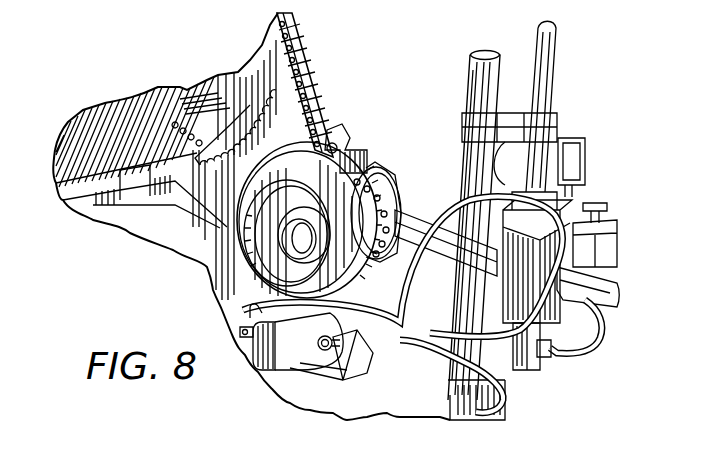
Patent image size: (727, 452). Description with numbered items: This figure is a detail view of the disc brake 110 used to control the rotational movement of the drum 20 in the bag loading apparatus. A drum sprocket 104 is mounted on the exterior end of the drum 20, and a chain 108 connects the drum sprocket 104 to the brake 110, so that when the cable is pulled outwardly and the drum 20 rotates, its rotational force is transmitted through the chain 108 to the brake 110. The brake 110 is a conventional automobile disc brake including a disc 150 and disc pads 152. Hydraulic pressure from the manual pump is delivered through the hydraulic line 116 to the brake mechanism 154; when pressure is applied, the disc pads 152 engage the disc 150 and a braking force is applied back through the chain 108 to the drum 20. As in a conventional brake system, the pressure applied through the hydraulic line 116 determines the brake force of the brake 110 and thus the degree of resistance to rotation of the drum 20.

The rotatable drum 20 is at (183, 95).
The drum sprocket 104 is at (267, 53).
The chain 108 is at (320, 107).
The disc brake 110 is at (196, 269).
The hydraulic line 116 is at (387, 323).
The disc 150 is at (237, 197).
The disc pads 152 is at (362, 291).
The brake mechanism 154 is at (310, 353).